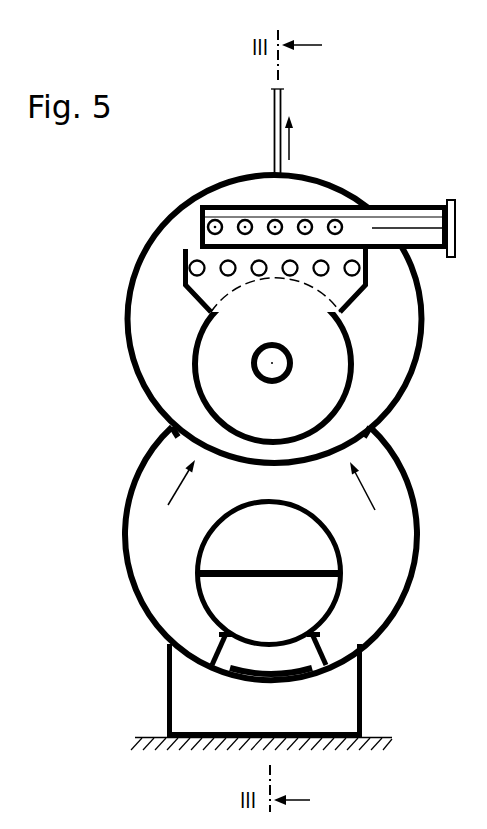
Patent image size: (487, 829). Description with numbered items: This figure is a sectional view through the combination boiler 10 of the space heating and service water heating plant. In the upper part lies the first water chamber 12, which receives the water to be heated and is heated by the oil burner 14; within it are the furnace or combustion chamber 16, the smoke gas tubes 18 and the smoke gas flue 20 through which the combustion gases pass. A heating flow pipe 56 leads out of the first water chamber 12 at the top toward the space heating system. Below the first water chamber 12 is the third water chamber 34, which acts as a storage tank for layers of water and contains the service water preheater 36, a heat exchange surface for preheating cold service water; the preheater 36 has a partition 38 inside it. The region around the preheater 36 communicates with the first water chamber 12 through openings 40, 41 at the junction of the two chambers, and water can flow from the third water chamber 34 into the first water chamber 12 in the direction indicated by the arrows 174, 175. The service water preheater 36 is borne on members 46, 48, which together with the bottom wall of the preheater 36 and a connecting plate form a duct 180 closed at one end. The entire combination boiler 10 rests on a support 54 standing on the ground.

The combination boiler 10 is at (197, 168).
The first water chamber 12 is at (168, 232).
The oil burner 14 is at (277, 372).
The furnace or combustion chamber 16 is at (338, 347).
The smoke gas tubes 18 is at (353, 262).
The smoke gas flue 20 is at (425, 226).
The third water chamber 34 is at (143, 576).
The service water preheater 36 is at (213, 600).
The partition 38 is at (282, 570).
The opening 40 is at (197, 446).
The opening 41 is at (337, 447).
The member 46 is at (215, 648).
The member 48 is at (340, 646).
The support 54 is at (172, 716).
The heating flow pipe 56 is at (274, 113).
The arrow 174 is at (173, 488).
The arrow 175 is at (365, 496).
The duct 180 is at (283, 662).